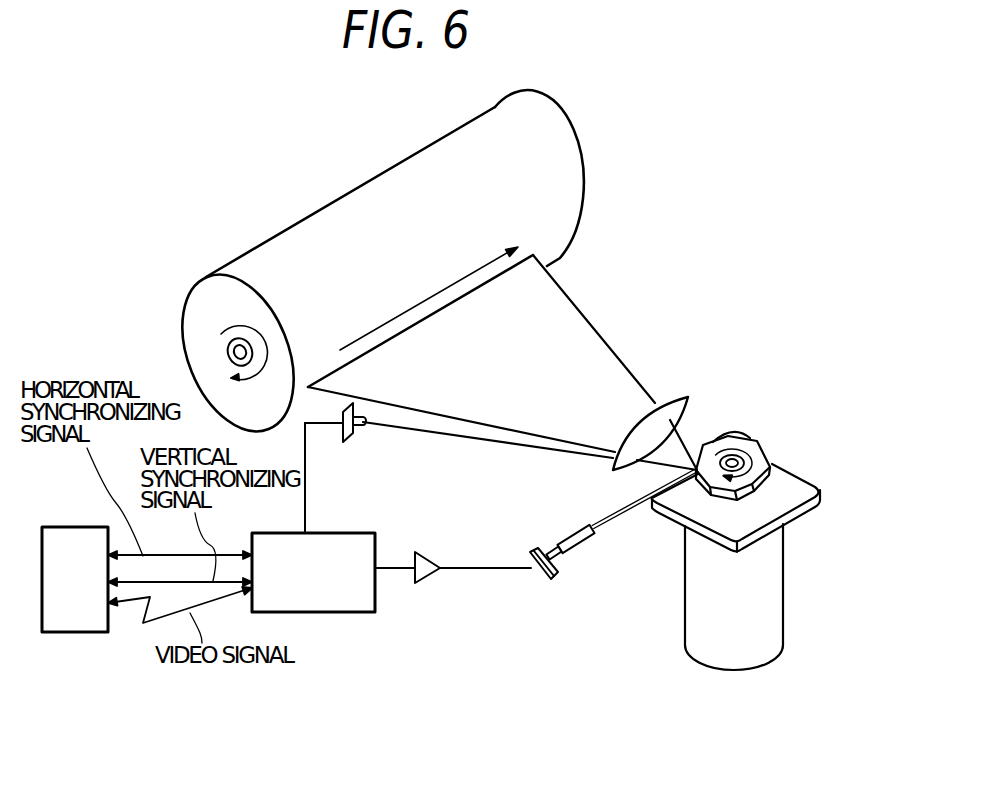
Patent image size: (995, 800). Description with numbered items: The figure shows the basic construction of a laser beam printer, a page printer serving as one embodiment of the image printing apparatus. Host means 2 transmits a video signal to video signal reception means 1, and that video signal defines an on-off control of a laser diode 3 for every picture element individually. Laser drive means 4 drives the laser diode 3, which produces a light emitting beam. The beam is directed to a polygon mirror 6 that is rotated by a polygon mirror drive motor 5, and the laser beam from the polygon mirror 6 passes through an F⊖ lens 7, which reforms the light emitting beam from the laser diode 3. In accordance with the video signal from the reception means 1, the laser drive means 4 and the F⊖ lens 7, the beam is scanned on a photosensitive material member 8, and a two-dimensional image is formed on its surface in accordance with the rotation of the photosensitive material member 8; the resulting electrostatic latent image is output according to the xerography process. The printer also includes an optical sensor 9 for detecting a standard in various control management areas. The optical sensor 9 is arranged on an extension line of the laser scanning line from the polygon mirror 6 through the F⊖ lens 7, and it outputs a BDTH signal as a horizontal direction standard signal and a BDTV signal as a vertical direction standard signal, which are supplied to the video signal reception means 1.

The video signal reception means 1 is at (307, 615).
The host means 2 is at (65, 633).
The laser diode 3 is at (540, 580).
The laser drive means 4 is at (425, 573).
The polygon mirror drive motor 5 is at (747, 655).
The polygon mirror 6 is at (770, 452).
The F⊖ lens 7 is at (670, 397).
The photosensitive material member 8 is at (377, 174).
The optical sensor 9 is at (367, 425).